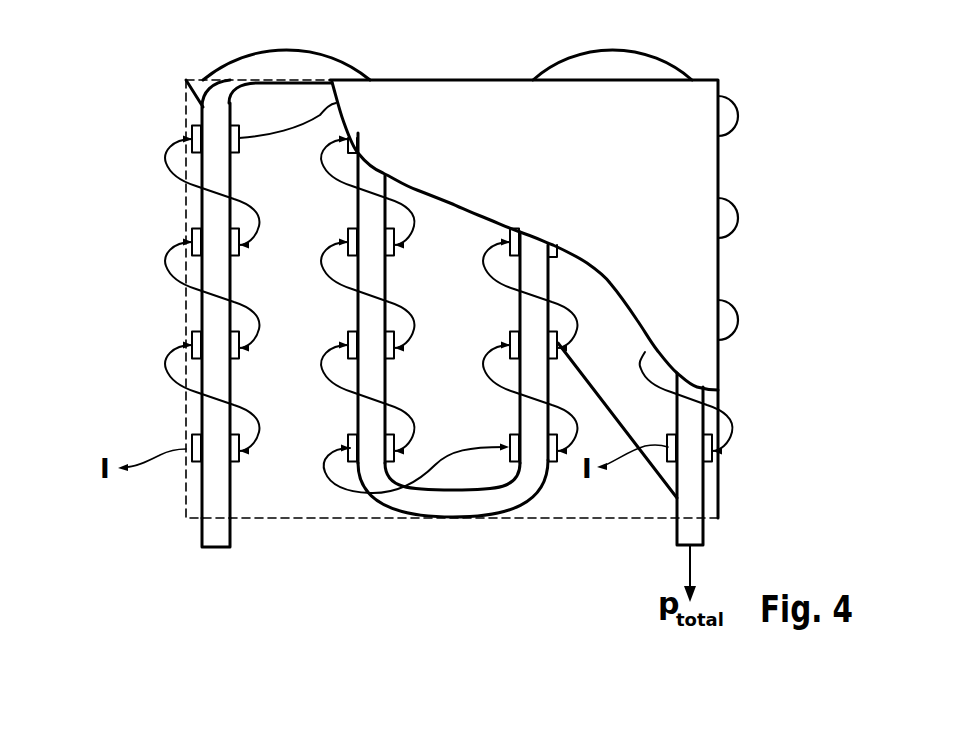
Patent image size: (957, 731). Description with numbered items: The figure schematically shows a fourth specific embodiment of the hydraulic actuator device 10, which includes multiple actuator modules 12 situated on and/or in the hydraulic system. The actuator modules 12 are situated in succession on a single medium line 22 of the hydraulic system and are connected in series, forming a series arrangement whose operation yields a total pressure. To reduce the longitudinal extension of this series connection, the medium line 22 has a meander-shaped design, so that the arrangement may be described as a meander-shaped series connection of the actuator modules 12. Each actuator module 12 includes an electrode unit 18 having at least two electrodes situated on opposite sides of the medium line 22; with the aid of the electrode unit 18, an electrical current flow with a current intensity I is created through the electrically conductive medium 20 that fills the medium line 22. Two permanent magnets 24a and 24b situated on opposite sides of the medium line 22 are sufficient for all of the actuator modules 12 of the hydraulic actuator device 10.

The hydraulic actuator device 10 is at (137, 547).
The actuator module 12 is at (172, 330).
The electrode unit 18 is at (231, 238).
The electrically conductive medium 20 is at (213, 542).
The medium line 22 is at (565, 67).
The permanent magnet 24a is at (692, 170).
The permanent magnet 24b is at (282, 108).